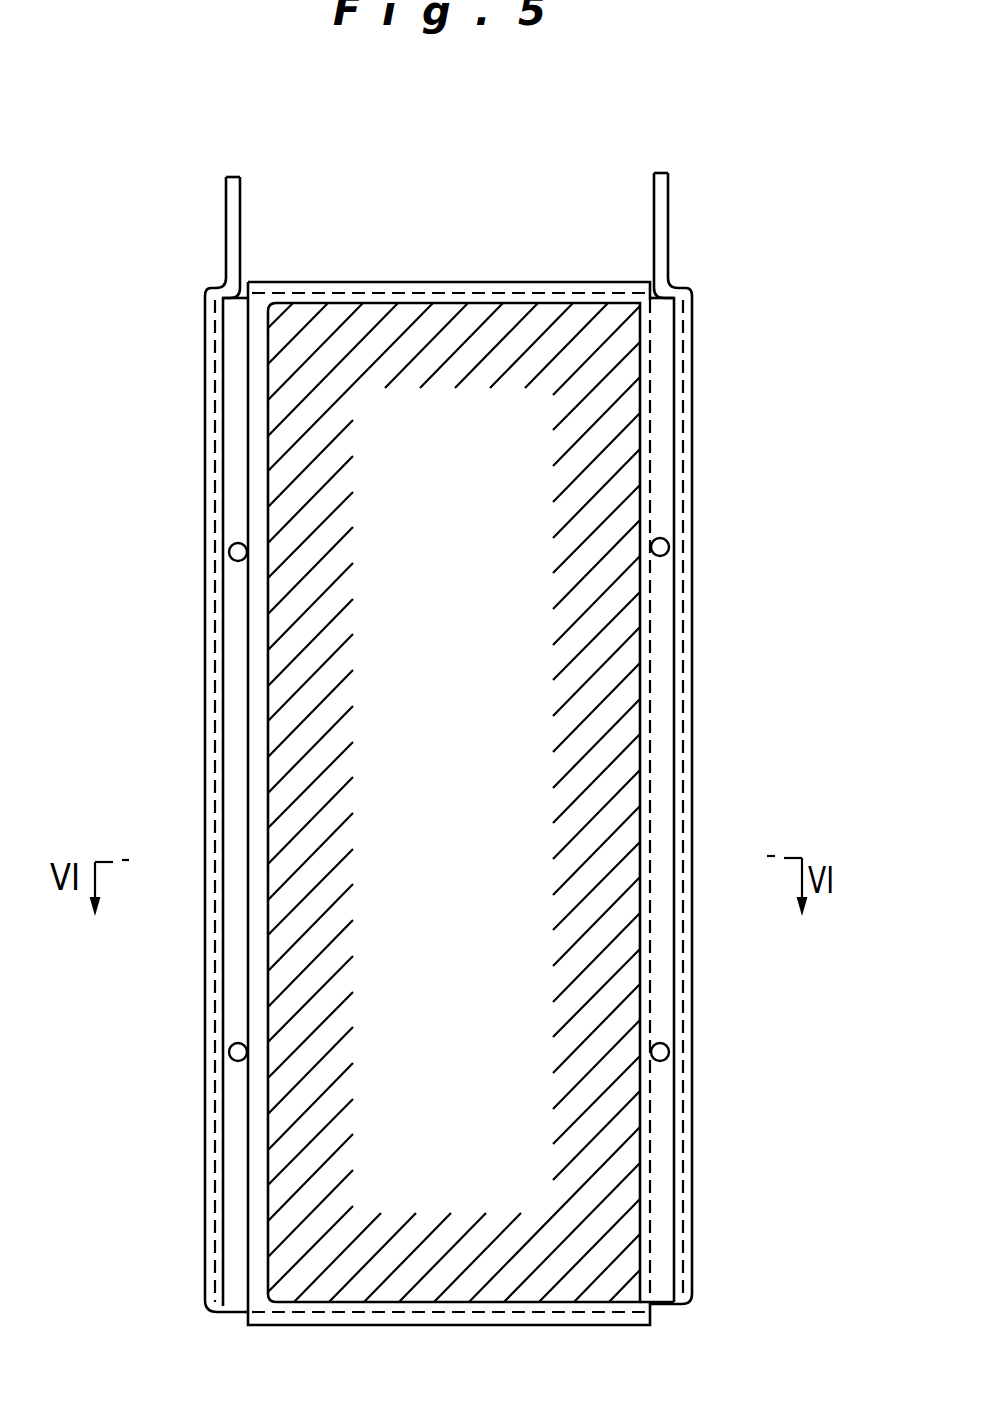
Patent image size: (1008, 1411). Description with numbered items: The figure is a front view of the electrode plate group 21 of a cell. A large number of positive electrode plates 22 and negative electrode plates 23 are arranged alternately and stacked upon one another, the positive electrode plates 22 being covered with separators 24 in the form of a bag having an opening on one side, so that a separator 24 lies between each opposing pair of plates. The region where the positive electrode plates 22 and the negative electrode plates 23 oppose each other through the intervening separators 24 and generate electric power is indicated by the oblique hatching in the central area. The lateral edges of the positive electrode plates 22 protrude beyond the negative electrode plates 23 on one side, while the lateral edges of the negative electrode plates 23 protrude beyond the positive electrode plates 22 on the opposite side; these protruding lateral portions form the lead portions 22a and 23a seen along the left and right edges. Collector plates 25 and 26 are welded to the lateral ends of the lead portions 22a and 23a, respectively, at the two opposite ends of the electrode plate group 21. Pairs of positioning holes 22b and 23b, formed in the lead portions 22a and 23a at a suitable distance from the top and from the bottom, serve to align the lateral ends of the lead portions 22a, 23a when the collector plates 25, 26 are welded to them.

The electrode plate group 21 is at (725, 277).
The positive electrode plate 22 is at (392, 296).
The lead portion 22a is at (237, 792).
The positioning hole 22b is at (238, 552).
The negative electrode plate 23 is at (530, 297).
The lead portion 23a is at (660, 787).
The positioning hole 23b is at (660, 547).
The separator 24 is at (262, 697).
The collector plate 25 is at (215, 962).
The collector plate 26 is at (683, 940).